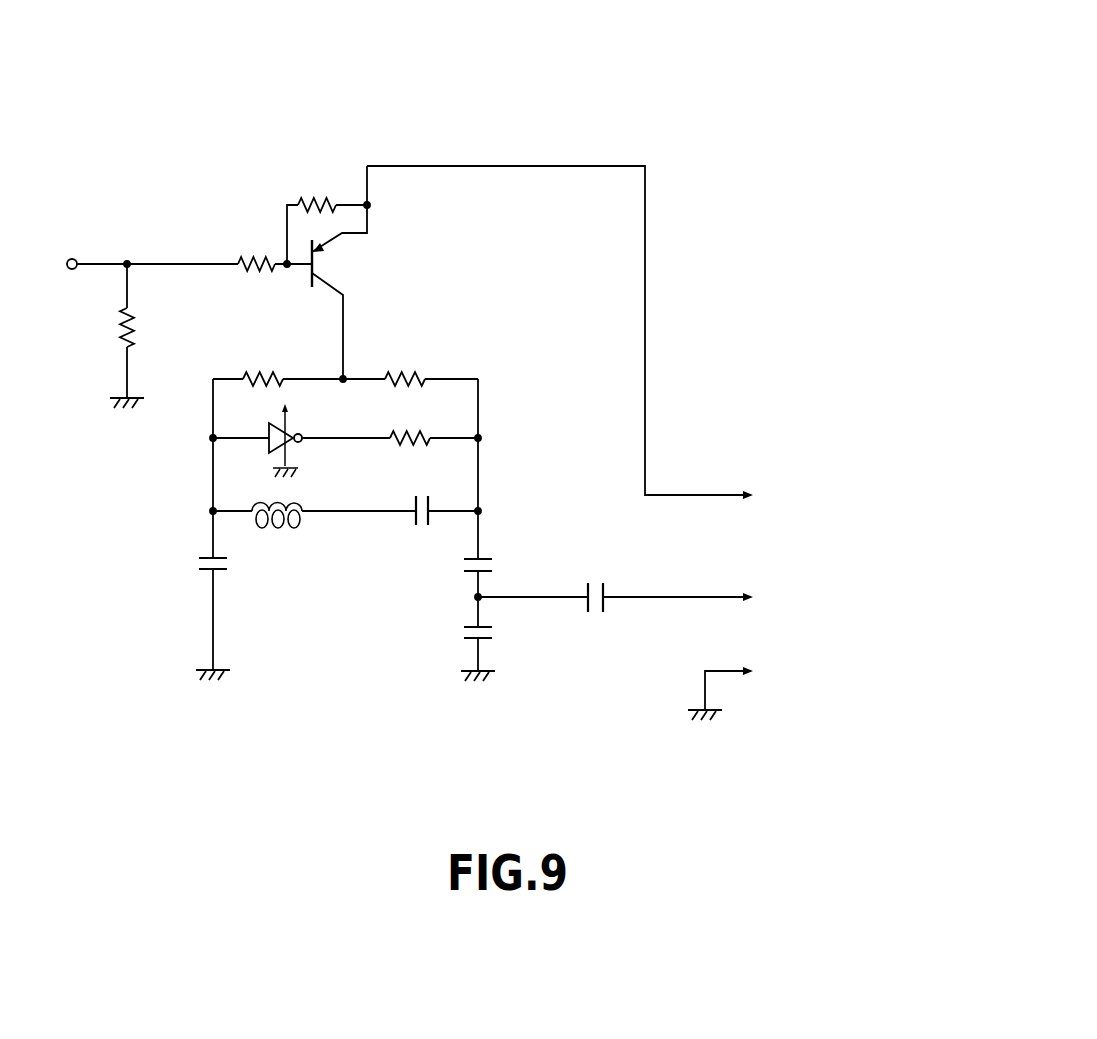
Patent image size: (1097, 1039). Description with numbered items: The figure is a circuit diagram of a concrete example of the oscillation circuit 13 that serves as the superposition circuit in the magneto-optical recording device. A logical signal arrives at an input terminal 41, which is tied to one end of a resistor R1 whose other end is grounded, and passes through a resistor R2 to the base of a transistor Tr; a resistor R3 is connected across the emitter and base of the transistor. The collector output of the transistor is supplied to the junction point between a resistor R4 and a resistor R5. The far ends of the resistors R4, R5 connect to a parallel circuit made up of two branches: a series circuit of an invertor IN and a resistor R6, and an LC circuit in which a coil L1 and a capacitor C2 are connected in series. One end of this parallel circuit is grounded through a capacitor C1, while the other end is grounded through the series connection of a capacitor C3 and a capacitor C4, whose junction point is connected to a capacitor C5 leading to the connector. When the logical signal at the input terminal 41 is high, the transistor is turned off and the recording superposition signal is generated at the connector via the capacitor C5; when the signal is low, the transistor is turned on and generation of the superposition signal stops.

The oscillation circuit 13 is at (491, 136).
The input terminal 41 is at (73, 257).
The resistor R1 is at (140, 336).
The resistor R2 is at (260, 247).
The resistor R3 is at (317, 192).
The resistor R4 is at (263, 364).
The resistor R5 is at (405, 364).
The resistor R6 is at (410, 423).
The capacitor C1 is at (229, 617).
The capacitor C2 is at (425, 523).
The capacitor C3 is at (495, 577).
The capacitor C4 is at (493, 639).
The capacitor C5 is at (596, 586).
The coil L1 is at (277, 527).